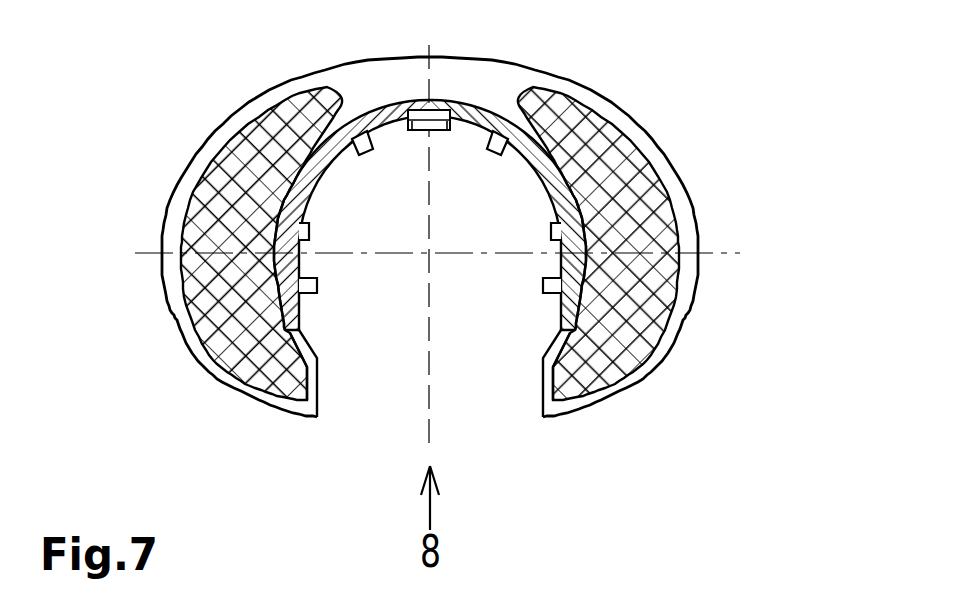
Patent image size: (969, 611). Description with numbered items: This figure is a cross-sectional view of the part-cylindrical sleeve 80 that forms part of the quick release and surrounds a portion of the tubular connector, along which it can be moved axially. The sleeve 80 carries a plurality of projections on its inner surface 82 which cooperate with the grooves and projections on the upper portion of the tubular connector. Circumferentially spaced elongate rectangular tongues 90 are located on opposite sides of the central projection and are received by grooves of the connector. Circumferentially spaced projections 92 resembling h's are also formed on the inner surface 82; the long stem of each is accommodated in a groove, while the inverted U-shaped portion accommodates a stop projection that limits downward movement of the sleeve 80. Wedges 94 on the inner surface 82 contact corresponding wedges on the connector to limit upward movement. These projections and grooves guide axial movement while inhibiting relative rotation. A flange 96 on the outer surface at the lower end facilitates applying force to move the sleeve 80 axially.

The part-cylindrical sleeve 80 is at (731, 60).
The inner surface 82 is at (524, 190).
The elongate rectangular tongues 90 is at (370, 158).
The h-shaped projections 92 is at (318, 284).
The wedges 94 is at (306, 229).
The flange 96 is at (622, 329).